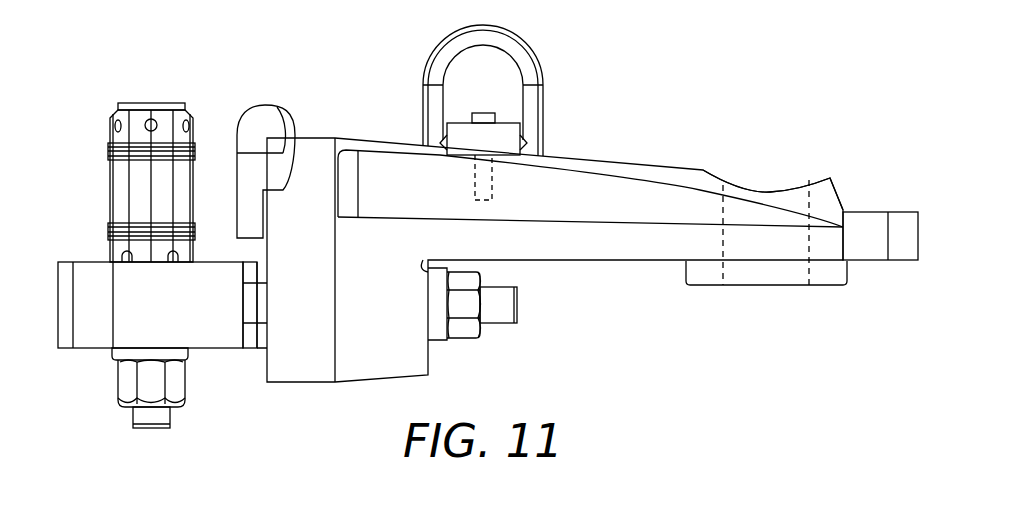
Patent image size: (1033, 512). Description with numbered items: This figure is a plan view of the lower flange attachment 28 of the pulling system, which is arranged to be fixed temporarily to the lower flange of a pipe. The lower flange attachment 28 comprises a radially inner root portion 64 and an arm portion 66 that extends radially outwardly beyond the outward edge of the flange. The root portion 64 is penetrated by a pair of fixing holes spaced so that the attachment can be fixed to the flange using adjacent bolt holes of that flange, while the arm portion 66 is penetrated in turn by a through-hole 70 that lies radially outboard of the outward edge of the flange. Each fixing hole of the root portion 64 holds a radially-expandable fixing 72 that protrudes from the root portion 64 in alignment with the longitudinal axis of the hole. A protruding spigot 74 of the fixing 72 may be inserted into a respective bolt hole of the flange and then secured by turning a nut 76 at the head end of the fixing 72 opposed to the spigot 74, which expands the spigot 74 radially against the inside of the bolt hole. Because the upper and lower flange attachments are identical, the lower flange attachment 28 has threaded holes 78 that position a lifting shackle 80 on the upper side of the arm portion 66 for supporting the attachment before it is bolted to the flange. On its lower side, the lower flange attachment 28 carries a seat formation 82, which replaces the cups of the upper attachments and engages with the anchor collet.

The lower flange attachment 28 is at (674, 97).
The root portion 64 is at (221, 338).
The arm portion 66 is at (604, 249).
The through-hole 70 is at (767, 208).
The radially-expandable fixing 72 is at (114, 87).
The spigot 74 is at (121, 184).
The nut 76 is at (125, 387).
The threaded holes 78 is at (496, 185).
The lifting shackle 80 is at (443, 41).
The seat formation 82 is at (703, 277).